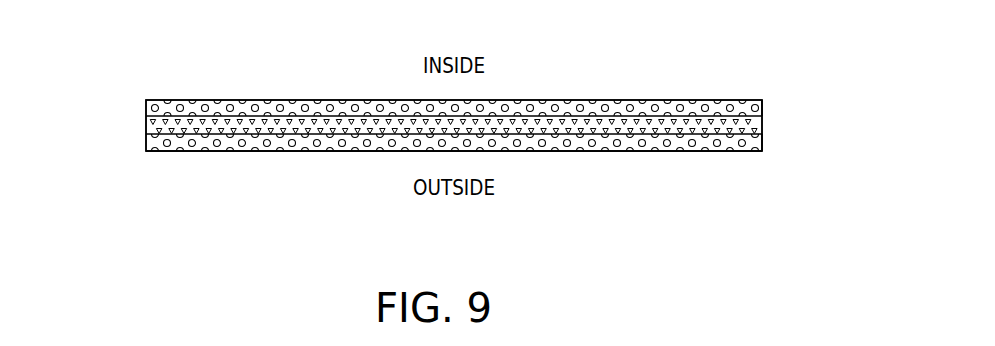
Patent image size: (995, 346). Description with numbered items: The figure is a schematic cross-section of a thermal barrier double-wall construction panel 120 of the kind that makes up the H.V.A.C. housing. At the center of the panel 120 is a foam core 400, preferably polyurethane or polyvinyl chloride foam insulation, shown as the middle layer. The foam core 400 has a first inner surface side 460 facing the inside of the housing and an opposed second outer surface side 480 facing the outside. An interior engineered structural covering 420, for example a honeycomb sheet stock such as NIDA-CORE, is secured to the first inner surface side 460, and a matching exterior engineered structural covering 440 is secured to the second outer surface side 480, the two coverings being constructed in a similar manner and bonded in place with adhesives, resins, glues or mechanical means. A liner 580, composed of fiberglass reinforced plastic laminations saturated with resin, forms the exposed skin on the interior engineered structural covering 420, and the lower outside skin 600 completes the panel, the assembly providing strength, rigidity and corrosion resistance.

The thermal barrier double-wall construction panel 120 is at (688, 83).
The foam core 400 is at (145, 124).
The interior engineered structural covering 420 is at (145, 103).
The exterior engineered structural covering 440 is at (145, 146).
The first inner surface side 460 is at (762, 112).
The second outer surface side 480 is at (762, 135).
The liner 580 is at (297, 98).
The outer surface of outside layer 600 is at (313, 152).